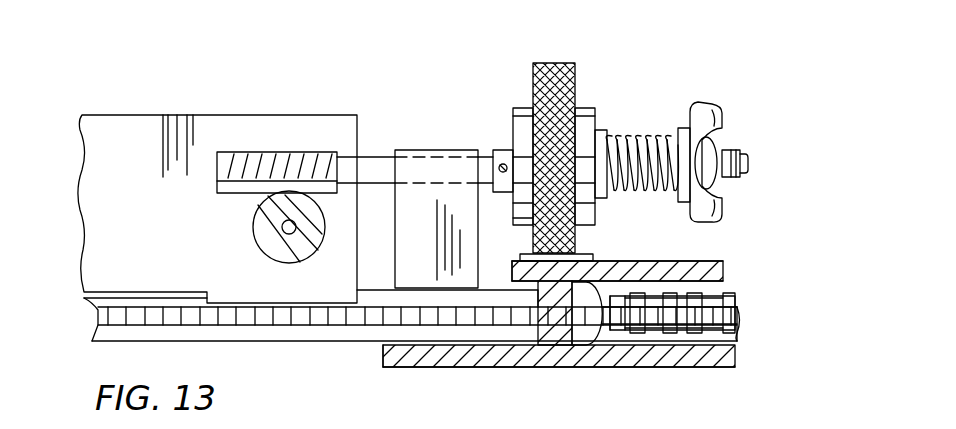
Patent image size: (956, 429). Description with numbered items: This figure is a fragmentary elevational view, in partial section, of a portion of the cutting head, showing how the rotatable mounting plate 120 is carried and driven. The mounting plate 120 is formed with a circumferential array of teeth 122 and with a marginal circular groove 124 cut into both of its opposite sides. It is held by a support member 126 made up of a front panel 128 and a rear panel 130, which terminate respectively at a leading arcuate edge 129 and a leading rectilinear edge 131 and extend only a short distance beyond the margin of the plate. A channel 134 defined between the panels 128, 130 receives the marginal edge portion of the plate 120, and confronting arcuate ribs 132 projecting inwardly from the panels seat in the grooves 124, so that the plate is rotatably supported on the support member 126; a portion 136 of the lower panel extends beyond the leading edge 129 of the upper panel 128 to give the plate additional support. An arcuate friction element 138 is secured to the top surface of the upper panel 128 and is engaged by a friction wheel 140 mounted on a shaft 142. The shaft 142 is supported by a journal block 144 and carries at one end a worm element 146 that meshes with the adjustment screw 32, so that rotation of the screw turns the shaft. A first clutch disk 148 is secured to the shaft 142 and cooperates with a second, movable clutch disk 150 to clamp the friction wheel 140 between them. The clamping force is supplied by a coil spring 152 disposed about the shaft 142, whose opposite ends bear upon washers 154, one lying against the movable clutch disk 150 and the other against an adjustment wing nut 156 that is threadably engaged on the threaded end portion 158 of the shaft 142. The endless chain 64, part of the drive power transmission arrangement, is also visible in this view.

The adjustment screw 32 is at (258, 233).
The endless chain 64 is at (748, 310).
The mounting plate 120 is at (92, 318).
The teeth 122 is at (303, 316).
The marginal circular groove 124 is at (575, 293).
The support member 126 is at (728, 266).
The front panel 128 is at (680, 262).
The leading arcuate edge 129 is at (508, 270).
The rear panel 130 is at (676, 356).
The leading rectilinear edge 131 is at (381, 366).
The arcuate ribs 132 is at (552, 332).
The channel 134 is at (740, 342).
The portion of the lower panel 136 is at (468, 356).
The arcuate friction element 138 is at (593, 256).
The friction wheel 140 is at (540, 63).
The shaft 142 is at (662, 152).
The journal block 144 is at (433, 150).
The worm element 146 is at (218, 191).
The first clutch disk 148 is at (522, 120).
The second clutch disk 150 is at (590, 108).
The coil spring 152 is at (628, 138).
The washers 154 is at (603, 204).
The adjustment wing nut 156 is at (722, 110).
The threaded end portion 158 is at (748, 160).